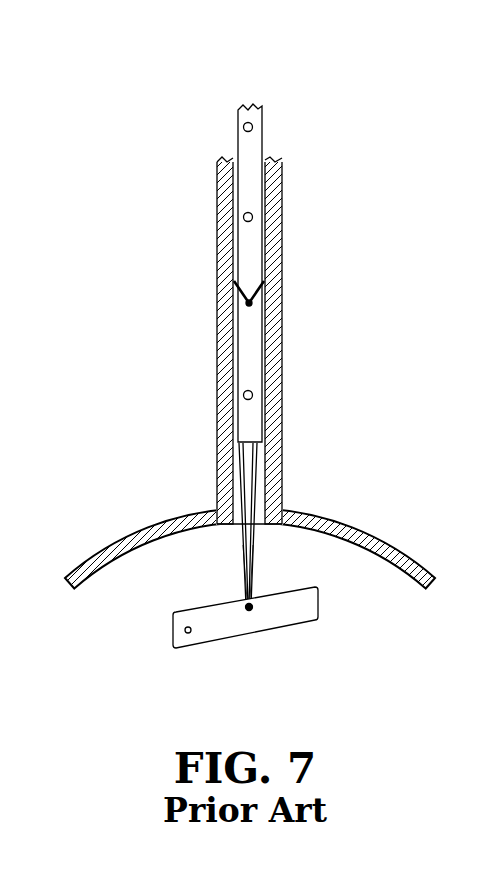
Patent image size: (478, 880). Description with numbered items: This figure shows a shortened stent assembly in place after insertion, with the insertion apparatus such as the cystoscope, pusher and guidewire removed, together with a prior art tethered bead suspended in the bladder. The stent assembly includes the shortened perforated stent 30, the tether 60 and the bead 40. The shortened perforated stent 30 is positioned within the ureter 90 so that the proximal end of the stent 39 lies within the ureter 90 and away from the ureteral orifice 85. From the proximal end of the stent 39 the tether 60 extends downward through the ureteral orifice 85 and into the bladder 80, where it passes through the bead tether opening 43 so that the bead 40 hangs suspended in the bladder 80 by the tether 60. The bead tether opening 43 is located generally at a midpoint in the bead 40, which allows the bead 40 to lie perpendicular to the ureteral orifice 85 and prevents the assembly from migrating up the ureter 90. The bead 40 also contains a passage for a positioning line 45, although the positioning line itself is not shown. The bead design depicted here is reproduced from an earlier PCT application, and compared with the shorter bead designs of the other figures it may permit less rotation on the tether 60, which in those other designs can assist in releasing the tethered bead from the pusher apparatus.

The shortened perforated stent 30 is at (250, 338).
The proximal end of the stent 39 is at (240, 447).
The bead 40 is at (247, 636).
The bead tether opening 43 is at (257, 614).
The passage for a positioning line 45 is at (188, 636).
The tether 60 is at (243, 572).
The bladder 80 is at (90, 580).
The ureteral orifice 85 is at (237, 526).
The ureter 90 is at (233, 288).